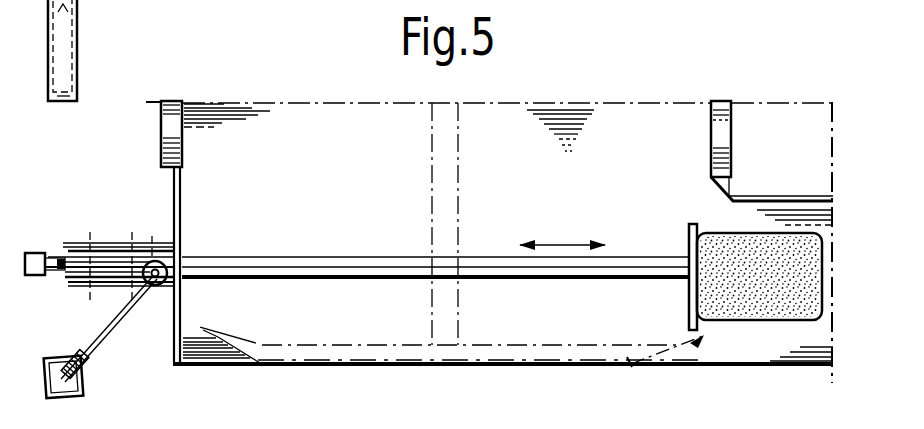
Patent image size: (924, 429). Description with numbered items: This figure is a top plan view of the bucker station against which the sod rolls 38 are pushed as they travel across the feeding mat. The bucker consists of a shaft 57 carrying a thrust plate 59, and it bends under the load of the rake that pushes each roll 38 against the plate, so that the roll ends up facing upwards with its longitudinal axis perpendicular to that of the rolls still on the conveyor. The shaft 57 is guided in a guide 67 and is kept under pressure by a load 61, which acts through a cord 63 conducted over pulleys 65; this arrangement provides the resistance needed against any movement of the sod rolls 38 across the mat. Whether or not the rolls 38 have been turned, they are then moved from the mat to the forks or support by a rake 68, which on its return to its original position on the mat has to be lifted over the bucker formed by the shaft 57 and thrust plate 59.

The roll 38 is at (773, 303).
The shaft 57 is at (340, 266).
The thrust plate 59 is at (688, 238).
The load 61 is at (64, 49).
The cord 63 is at (98, 348).
The pulleys 65 is at (80, 356).
The guide 67 is at (114, 243).
The rake 68 is at (630, 376).